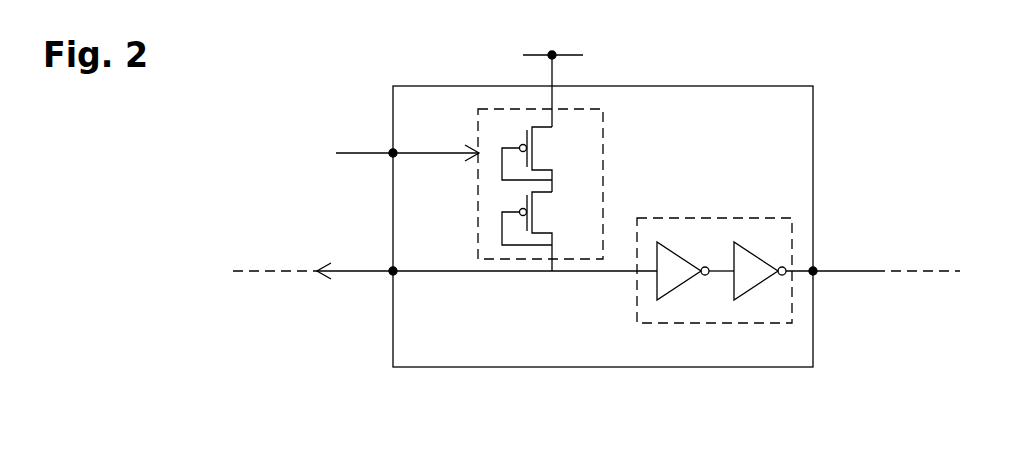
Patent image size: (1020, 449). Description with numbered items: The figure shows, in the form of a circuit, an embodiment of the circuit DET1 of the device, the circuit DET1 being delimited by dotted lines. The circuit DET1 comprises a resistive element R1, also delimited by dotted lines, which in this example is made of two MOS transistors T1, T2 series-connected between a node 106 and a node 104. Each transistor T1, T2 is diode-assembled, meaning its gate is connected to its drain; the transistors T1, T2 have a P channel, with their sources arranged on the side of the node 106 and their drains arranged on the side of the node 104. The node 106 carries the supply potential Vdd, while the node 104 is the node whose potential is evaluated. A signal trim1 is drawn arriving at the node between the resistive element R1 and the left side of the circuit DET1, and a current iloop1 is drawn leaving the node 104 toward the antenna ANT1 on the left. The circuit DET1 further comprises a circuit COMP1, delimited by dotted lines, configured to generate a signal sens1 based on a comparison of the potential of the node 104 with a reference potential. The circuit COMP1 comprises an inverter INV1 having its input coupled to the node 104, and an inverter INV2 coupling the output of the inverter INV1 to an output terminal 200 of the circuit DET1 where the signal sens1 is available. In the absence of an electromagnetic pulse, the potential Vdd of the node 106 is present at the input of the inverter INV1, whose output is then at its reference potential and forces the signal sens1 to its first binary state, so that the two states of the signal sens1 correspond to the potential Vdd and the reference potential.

The node 104 is at (391, 273).
The node 106 is at (556, 57).
The output terminal 200 is at (818, 274).
The circuit DET1 is at (741, 72).
The circuit COMP1 is at (676, 202).
The resistive element R1 is at (478, 232).
The transistor T1 is at (545, 147).
The transistor T2 is at (545, 213).
The inverter INV1 is at (670, 273).
The inverter INV2 is at (752, 273).
The antenna ANT1 is at (266, 256).
The trim signal trim1 is at (377, 153).
The loop current iloop1 is at (335, 259).
The signal sens1 is at (917, 258).
The potential Vdd is at (551, 75).